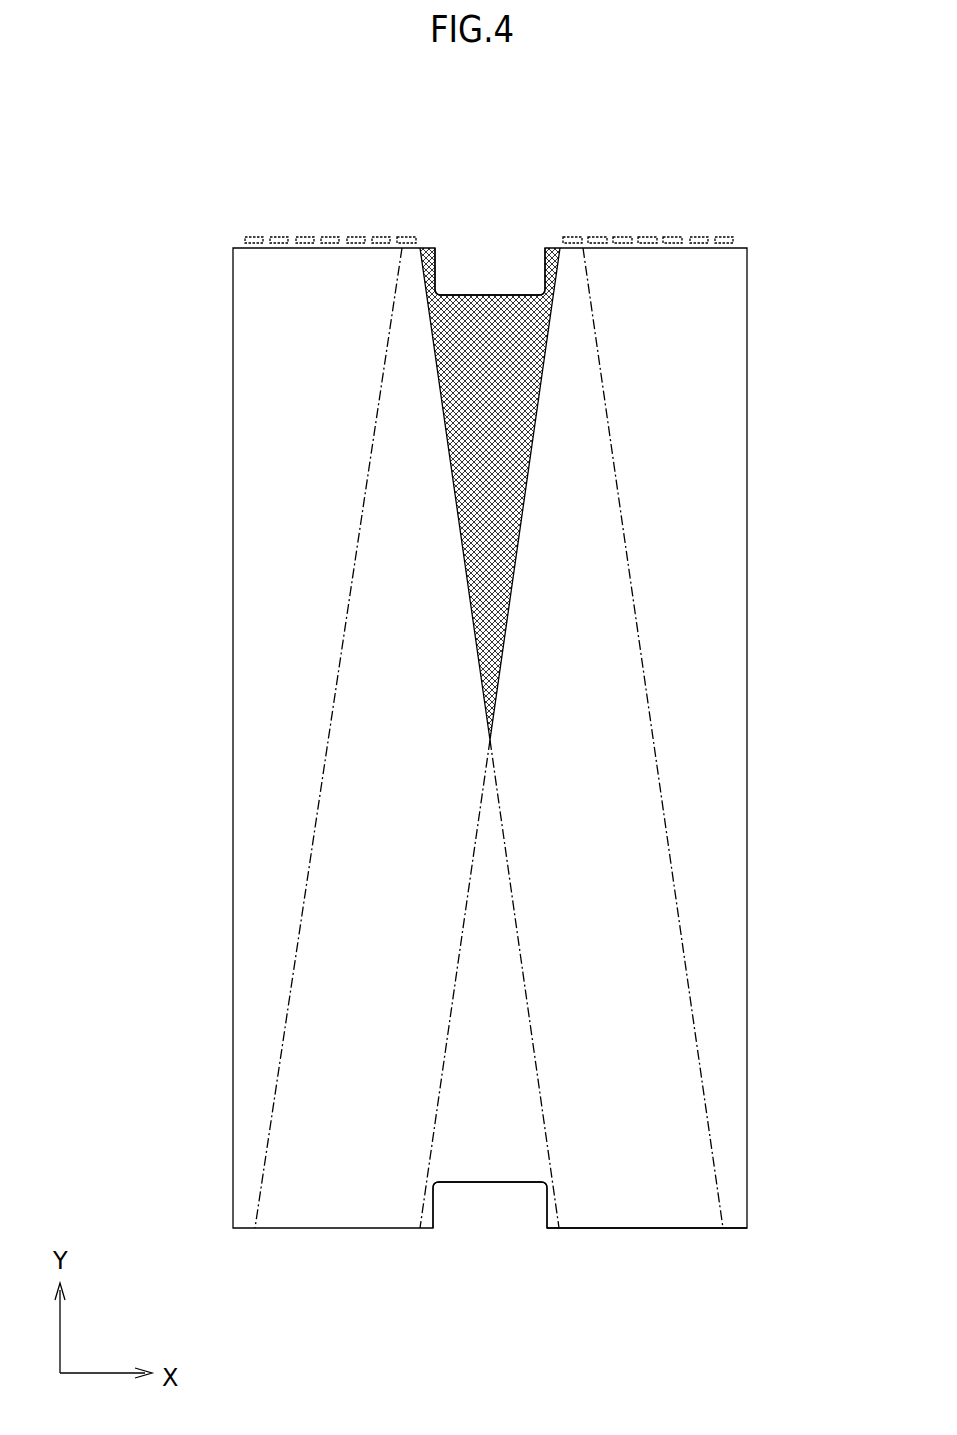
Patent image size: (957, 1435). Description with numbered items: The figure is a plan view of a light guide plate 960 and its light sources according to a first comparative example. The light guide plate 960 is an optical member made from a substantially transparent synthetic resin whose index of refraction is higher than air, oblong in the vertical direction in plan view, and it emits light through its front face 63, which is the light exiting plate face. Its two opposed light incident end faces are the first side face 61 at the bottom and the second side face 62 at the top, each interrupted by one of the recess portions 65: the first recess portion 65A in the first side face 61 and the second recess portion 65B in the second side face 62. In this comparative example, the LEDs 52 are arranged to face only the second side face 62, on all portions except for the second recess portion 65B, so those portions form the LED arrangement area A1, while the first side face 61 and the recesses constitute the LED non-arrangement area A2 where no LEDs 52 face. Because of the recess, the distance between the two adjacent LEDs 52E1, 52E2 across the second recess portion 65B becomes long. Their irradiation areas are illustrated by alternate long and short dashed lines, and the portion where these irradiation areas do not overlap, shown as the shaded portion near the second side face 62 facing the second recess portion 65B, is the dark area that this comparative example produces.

The light guide plate 960 is at (772, 427).
The front face 63 is at (730, 620).
The second side face 62 is at (553, 248).
The first side face 61 is at (585, 1229).
The recess portions 65 is at (490, 752).
The first recess portion 65A is at (490, 1183).
The second recess portion 65B is at (497, 296).
The LEDs 52 is at (278, 238).
The adjacent LED 52E1 is at (407, 237).
The adjacent LED 52E2 is at (573, 237).
The LED arrangement area A1 is at (737, 247).
The LED non-arrangement area A2 is at (243, 237).